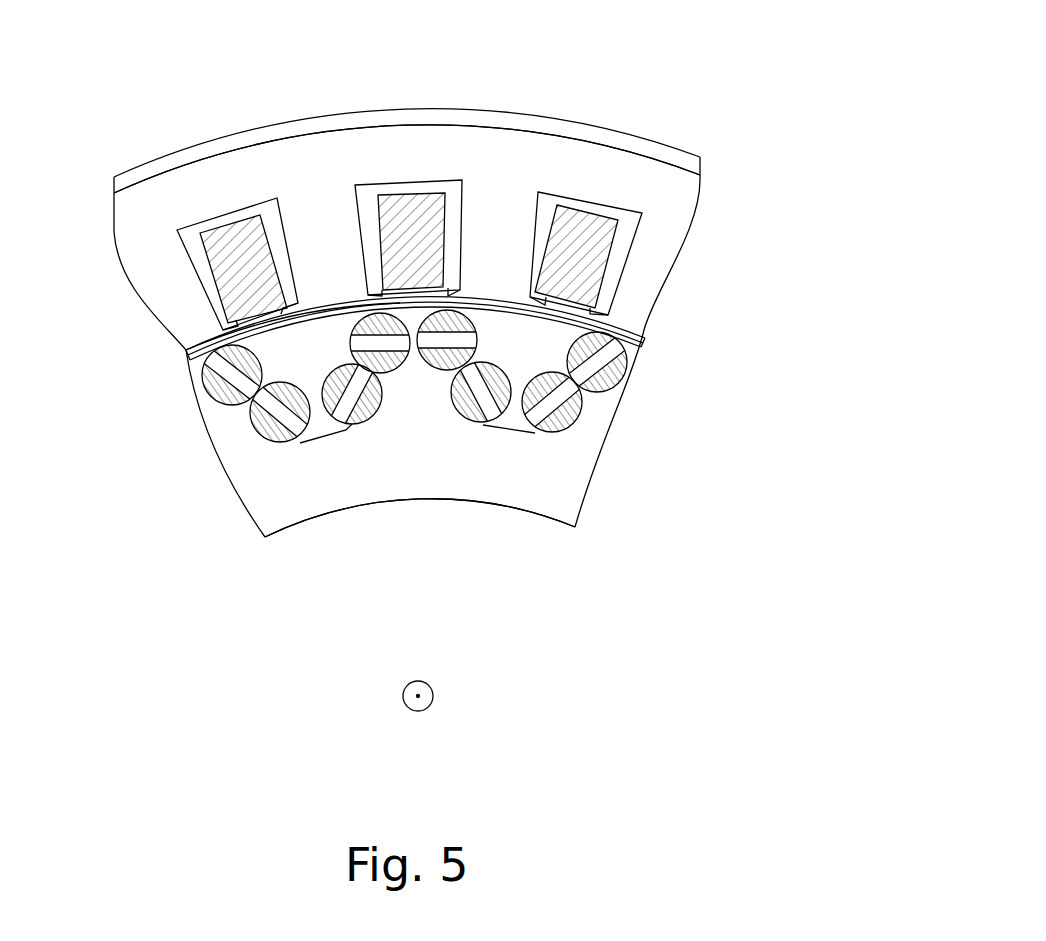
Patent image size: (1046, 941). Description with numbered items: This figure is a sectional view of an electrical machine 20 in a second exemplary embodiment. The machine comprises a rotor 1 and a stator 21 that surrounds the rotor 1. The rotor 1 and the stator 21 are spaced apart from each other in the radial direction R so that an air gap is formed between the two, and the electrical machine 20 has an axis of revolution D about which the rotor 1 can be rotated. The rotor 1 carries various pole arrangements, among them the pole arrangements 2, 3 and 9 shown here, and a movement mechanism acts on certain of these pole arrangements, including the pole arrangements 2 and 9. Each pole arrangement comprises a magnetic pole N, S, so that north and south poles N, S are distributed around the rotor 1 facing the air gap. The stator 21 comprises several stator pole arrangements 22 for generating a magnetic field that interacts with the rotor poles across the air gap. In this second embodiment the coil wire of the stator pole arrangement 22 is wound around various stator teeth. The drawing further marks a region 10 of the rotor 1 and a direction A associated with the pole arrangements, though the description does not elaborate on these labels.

The rotor 1 is at (650, 380).
The pole arrangement 2 is at (200, 367).
The pole arrangement 3 is at (268, 440).
The pole arrangement 9 is at (640, 347).
The rotor core 10 is at (345, 475).
The electrical machine 20 is at (710, 100).
The stator 21 is at (217, 178).
The stator pole arrangement 22 is at (327, 237).
The magnet axis A is at (378, 343).
The magnetic pole N is at (217, 383).
The magnetic pole S is at (285, 390).
The axis of revolution D is at (433, 690).
The radial direction R is at (775, 313).